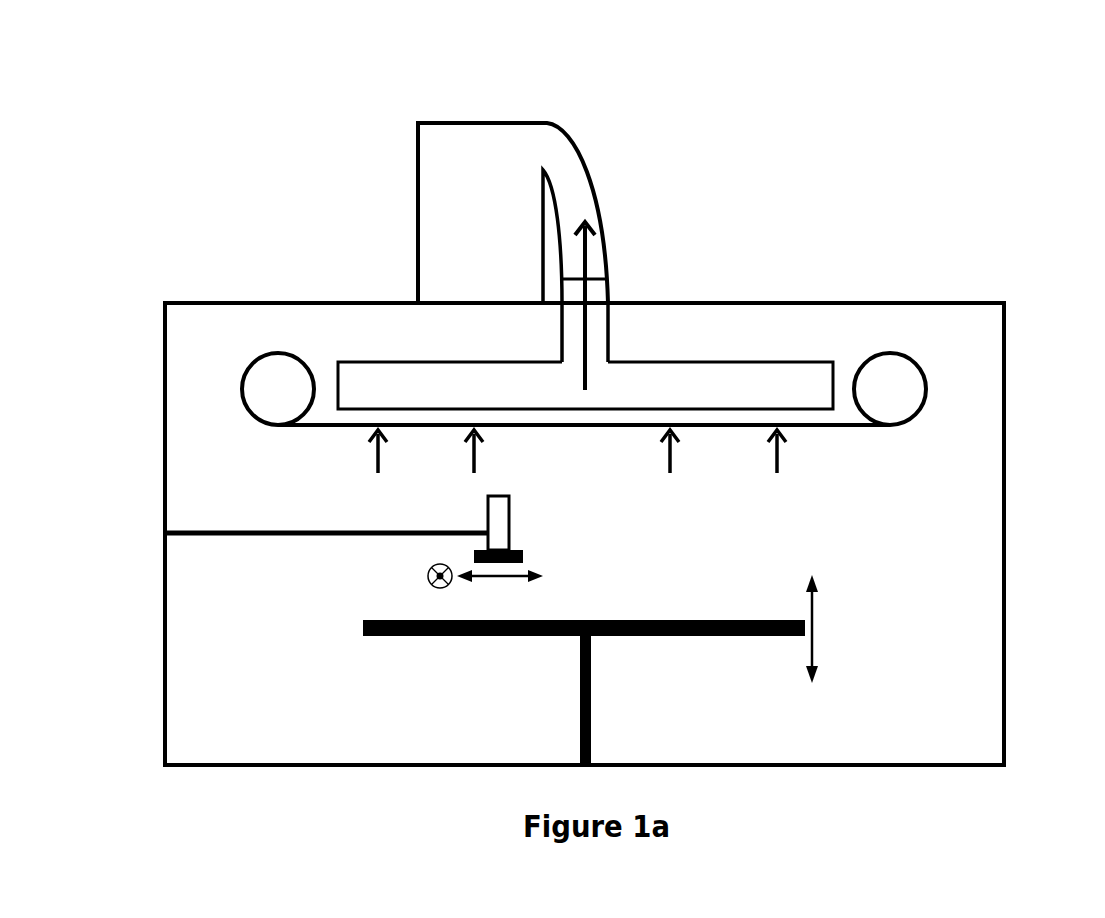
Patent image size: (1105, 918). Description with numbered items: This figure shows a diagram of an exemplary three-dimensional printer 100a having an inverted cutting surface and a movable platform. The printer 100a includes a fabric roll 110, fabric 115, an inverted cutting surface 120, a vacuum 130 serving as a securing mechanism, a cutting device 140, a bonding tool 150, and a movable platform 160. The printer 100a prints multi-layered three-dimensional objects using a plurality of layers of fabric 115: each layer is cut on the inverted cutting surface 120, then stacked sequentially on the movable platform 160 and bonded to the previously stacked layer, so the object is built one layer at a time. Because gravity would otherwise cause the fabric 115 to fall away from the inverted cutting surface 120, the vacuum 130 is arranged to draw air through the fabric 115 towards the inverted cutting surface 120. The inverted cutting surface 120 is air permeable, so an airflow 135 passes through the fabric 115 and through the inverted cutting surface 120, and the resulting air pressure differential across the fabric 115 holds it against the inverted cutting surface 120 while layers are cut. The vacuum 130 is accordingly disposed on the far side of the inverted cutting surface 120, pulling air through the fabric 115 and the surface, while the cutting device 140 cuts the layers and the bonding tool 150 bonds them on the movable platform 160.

The 3D printer 100a is at (236, 214).
The fabric roll 110 is at (252, 362).
The fabric 115 is at (835, 428).
The inverted cutting surface 120 is at (438, 408).
The vacuum 130 is at (447, 121).
The airflow 135 is at (607, 262).
The cutting device 140 is at (509, 500).
The bonding tool 150 is at (523, 560).
The movable platform 160 is at (362, 626).